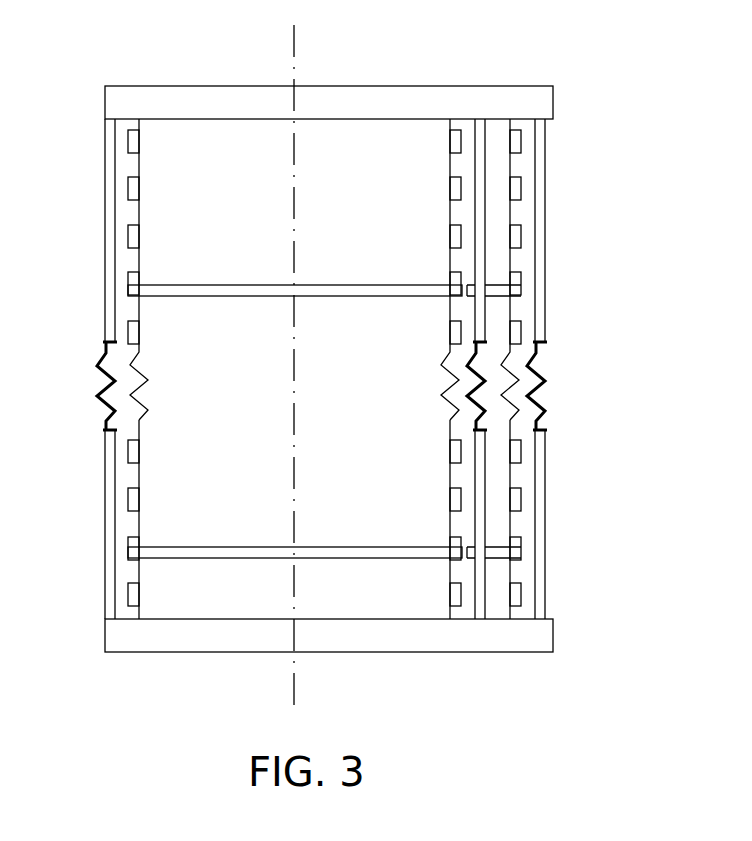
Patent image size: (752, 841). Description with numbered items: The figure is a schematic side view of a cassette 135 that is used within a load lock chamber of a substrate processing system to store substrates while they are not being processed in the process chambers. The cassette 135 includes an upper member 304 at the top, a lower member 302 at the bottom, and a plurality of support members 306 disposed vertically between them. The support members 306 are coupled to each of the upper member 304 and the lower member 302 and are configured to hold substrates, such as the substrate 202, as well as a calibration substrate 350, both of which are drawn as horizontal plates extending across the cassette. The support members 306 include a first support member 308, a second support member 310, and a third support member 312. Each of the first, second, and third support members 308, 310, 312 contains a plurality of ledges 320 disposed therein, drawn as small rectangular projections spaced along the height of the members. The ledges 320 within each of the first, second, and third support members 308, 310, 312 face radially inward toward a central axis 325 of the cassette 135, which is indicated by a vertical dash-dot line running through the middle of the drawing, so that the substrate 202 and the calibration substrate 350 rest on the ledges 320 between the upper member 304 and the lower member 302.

The cassette 135 is at (548, 63).
The substrate 202 is at (229, 296).
The lower member 302 is at (116, 639).
The upper member 304 is at (243, 95).
The support members 306 is at (82, 178).
The first support member 308 is at (115, 270).
The second support member 310 is at (525, 205).
The third support member 312 is at (462, 212).
The ledges 320 is at (138, 141).
The central axis 325 is at (294, 51).
The calibration substrate 350 is at (232, 547).